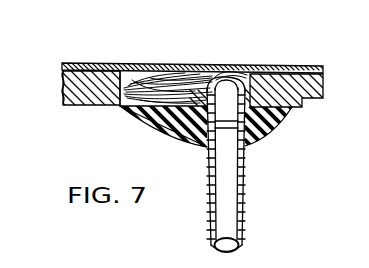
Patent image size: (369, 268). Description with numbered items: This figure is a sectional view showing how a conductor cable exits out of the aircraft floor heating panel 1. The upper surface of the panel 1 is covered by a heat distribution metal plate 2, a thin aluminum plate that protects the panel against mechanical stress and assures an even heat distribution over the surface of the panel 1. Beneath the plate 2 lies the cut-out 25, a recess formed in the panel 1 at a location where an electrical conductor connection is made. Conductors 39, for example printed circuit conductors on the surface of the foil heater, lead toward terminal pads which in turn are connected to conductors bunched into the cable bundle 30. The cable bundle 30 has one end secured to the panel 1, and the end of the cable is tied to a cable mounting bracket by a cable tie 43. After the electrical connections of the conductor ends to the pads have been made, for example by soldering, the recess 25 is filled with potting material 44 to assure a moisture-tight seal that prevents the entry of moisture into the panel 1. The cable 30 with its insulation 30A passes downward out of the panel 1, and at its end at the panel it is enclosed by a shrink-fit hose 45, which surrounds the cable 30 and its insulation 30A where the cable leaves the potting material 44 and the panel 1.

The panel 1 is at (78, 54).
The heat distribution metal plate 2 is at (275, 68).
The cut-out 25 is at (140, 93).
The conductors 39 is at (189, 66).
The cable tie 43 is at (225, 127).
The potting material 44 is at (278, 112).
The cable bundle 30 is at (228, 229).
The insulation 30A is at (243, 212).
The shrink-fit hose 45 is at (204, 193).